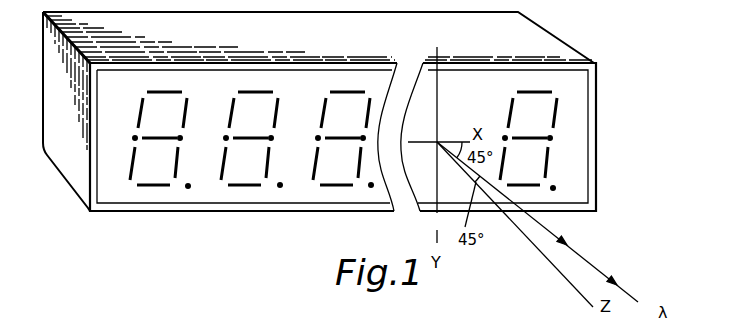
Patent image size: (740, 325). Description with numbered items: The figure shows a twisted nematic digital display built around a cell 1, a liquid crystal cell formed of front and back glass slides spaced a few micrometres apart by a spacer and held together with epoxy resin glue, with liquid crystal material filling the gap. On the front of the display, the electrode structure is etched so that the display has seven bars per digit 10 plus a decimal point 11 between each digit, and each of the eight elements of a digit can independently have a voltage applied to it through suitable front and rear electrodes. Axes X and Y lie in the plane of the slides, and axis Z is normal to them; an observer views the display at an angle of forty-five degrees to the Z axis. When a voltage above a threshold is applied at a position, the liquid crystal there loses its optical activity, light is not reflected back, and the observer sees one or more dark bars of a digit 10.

The cell 1 is at (319, 130).
The digit 10 is at (153, 188).
The decimal point 11 is at (188, 190).